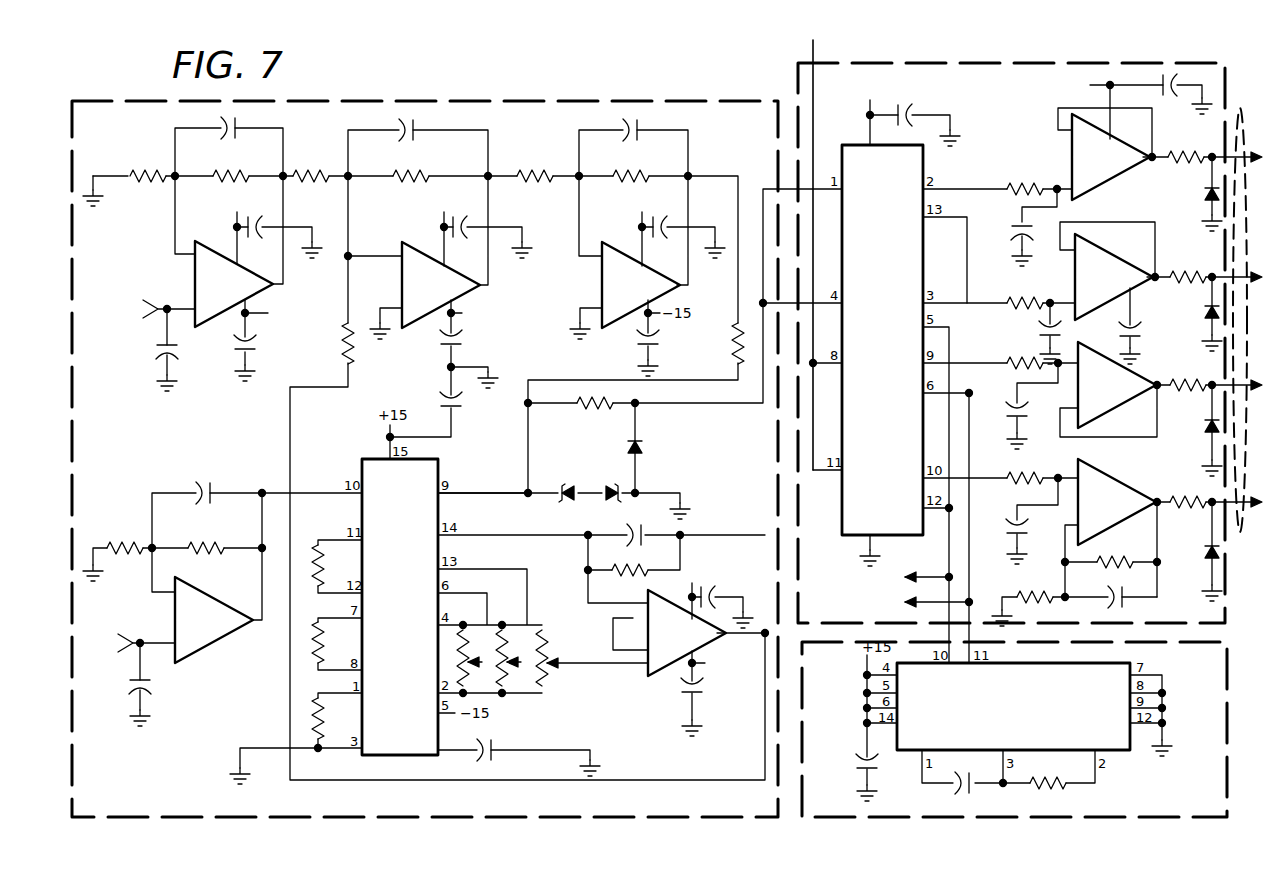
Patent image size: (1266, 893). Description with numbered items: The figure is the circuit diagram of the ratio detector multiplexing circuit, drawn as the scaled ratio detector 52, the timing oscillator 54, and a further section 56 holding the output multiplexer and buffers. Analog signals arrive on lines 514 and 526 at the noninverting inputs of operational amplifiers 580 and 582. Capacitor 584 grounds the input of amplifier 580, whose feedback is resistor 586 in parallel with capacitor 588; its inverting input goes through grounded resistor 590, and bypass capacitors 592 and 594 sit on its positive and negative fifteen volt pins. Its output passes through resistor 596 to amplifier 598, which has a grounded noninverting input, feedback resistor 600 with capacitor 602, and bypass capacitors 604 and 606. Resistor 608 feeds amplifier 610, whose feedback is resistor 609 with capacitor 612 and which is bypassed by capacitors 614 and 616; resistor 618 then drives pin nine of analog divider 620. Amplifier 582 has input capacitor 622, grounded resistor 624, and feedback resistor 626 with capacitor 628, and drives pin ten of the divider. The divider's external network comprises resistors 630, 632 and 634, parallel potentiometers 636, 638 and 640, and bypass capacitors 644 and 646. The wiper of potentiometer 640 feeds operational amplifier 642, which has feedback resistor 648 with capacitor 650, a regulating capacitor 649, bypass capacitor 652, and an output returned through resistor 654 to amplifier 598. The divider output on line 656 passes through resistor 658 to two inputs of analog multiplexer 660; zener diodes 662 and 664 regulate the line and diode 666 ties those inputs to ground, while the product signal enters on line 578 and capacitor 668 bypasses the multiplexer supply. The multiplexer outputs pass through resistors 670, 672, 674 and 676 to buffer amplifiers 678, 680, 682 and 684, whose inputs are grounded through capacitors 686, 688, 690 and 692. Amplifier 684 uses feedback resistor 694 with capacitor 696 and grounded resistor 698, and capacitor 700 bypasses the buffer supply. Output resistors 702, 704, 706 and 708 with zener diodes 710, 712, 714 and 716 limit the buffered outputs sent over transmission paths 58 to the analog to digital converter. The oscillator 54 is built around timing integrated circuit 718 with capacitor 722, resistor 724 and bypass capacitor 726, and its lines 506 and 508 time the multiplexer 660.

The scaled ratio detector 52 is at (144, 100).
The timing oscillator 54 is at (1014, 729).
The sample and hold / output section 56 is at (797, 85).
The transmission paths 58 is at (1240, 130).
The line 506 is at (940, 565).
The line 508 is at (968, 600).
The line 514 is at (152, 306).
The line 526 is at (124, 636).
The line 578 is at (814, 48).
The operational amplifier 580 is at (234, 284).
The operational amplifier 582 is at (214, 620).
The capacitor 584 is at (155, 357).
The resistor 586 is at (230, 165).
The capacitor 588 is at (238, 128).
The resistor 590 is at (160, 165).
The bypass capacitor 592 is at (270, 222).
The bypass capacitor 594 is at (252, 342).
The resistor 596 is at (330, 165).
The operational amplifier 598 is at (441, 285).
The resistor 600 is at (412, 166).
The capacitor 602 is at (416, 128).
The bypass capacitor 604 is at (475, 222).
The bypass capacitor 606 is at (468, 340).
The resistor 608 is at (535, 165).
The resistor 609 is at (632, 166).
The operational amplifier 610 is at (641, 285).
The capacitor 612 is at (642, 128).
The bypass capacitor 614 is at (674, 222).
The bypass capacitor 616 is at (622, 340).
The resistor 618 is at (730, 340).
The analog divider 620 is at (400, 607).
The capacitor 622 is at (160, 695).
The resistor 624 is at (138, 538).
The resistor 626 is at (206, 538).
The capacitor 628 is at (212, 482).
The resistor 630 is at (312, 560).
The resistor 632 is at (312, 652).
The resistor 634 is at (312, 712).
The potentiometer 636 is at (470, 655).
The potentiometer 638 is at (515, 668).
The potentiometer 640 is at (550, 678).
The operational amplifier 642 is at (687, 633).
The bypass capacitor 644 is at (494, 758).
The bypass capacitor 646 is at (465, 398).
The resistor 648 is at (610, 565).
The regulating capacitor 649 is at (612, 640).
The capacitor 650 is at (622, 528).
The bypass capacitor 652 is at (678, 690).
The resistor 654 is at (340, 350).
The line 656 is at (488, 490).
The resistor 658 is at (600, 420).
The analog multiplexer 660 is at (882, 355).
The zener diode 662 is at (568, 485).
The zener diode 664 is at (608, 485).
The diode 666 is at (645, 448).
The bypass capacitor 668 is at (915, 100).
The resistor 670 is at (1035, 175).
The resistor 672 is at (1020, 295).
The resistor 674 is at (1018, 355).
The resistor 676 is at (1020, 472).
The output buffer amplifier 678 is at (1113, 154).
The output buffer amplifier 680 is at (1115, 293).
The output buffer amplifier 682 is at (1115, 389).
The output buffer amplifier 684 is at (1117, 528).
The capacitor 686 is at (1018, 215).
The capacitor 688 is at (1036, 328).
The capacitor 690 is at (1000, 402).
The capacitor 692 is at (1002, 518).
The resistor 694 is at (1118, 558).
The capacitor 696 is at (1122, 605).
The resistor 698 is at (1045, 588).
The capacitor 700 is at (1162, 72).
The output resistor 702 is at (1205, 150).
The output resistor 704 is at (1192, 270).
The output resistor 706 is at (1192, 378).
The output resistor 708 is at (1192, 497).
The zener diode 710 is at (1205, 195).
The zener diode 712 is at (1205, 316).
The zener diode 714 is at (1205, 427).
The zener diode 716 is at (1205, 555).
The timing oscillator integrated circuit 718 is at (1013, 706).
The capacitor 722 is at (975, 790).
The resistor 724 is at (1058, 790).
The bypass capacitor 726 is at (850, 762).